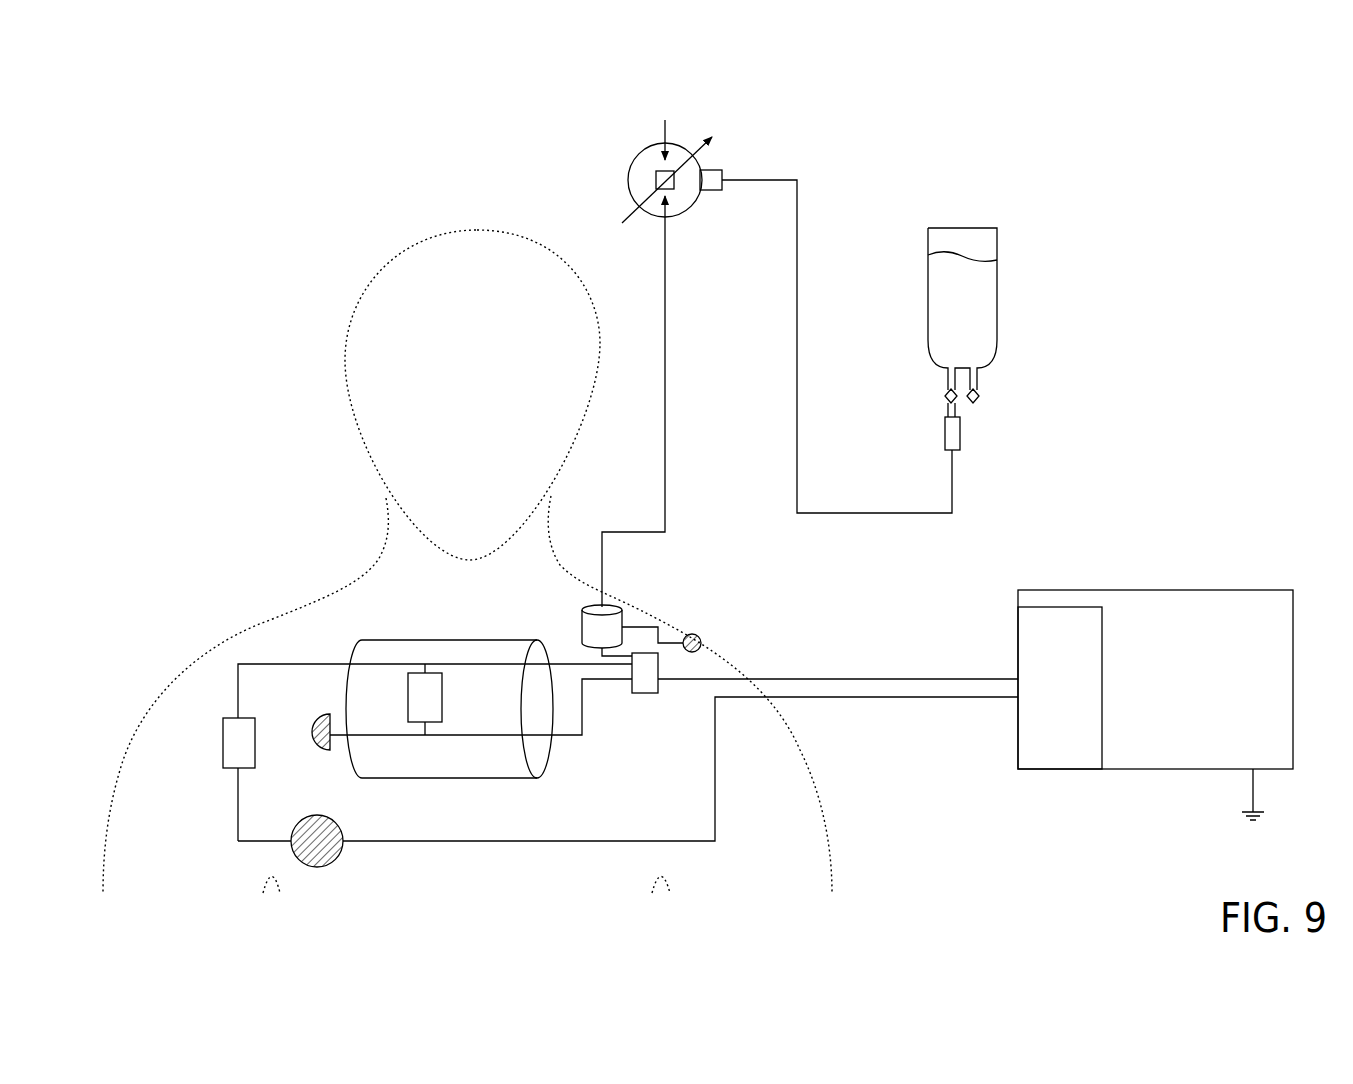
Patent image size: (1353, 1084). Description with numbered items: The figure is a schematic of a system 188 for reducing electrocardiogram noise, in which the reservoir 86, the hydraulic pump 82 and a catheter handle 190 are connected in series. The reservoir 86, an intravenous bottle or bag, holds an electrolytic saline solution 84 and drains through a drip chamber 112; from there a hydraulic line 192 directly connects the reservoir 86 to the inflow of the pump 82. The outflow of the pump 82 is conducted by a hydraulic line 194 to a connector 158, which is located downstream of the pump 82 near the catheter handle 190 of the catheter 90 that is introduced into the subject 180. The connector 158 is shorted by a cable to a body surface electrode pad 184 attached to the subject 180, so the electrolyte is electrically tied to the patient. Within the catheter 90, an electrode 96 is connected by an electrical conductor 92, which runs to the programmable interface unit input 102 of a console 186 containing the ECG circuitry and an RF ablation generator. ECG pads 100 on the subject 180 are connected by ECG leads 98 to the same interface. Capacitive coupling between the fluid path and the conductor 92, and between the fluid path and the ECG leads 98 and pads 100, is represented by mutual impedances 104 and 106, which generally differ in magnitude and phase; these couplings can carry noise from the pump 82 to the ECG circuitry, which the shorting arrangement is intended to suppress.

The system 188 is at (324, 201).
The subject 180 is at (346, 368).
The hydraulic pump 82 is at (628, 183).
The hydraulic line 192 is at (792, 178).
The hydraulic line 194 is at (667, 275).
The saline solution 84 is at (990, 290).
The reservoir 86 is at (927, 240).
The drip chamber 112 is at (942, 432).
The console 186 is at (1142, 590).
The programmable interface unit input 102 is at (1068, 607).
The connector 158 is at (582, 615).
The electrode pad 184 is at (698, 636).
The catheter handle 190 is at (647, 693).
The catheter 90 is at (447, 640).
The mutual impedance 104 is at (442, 697).
The electrode 96 is at (316, 745).
The electrical conductor 92 is at (577, 745).
The mutual impedance 106 is at (221, 768).
The ECG pads 100 is at (320, 867).
The ECG leads 98 is at (487, 843).